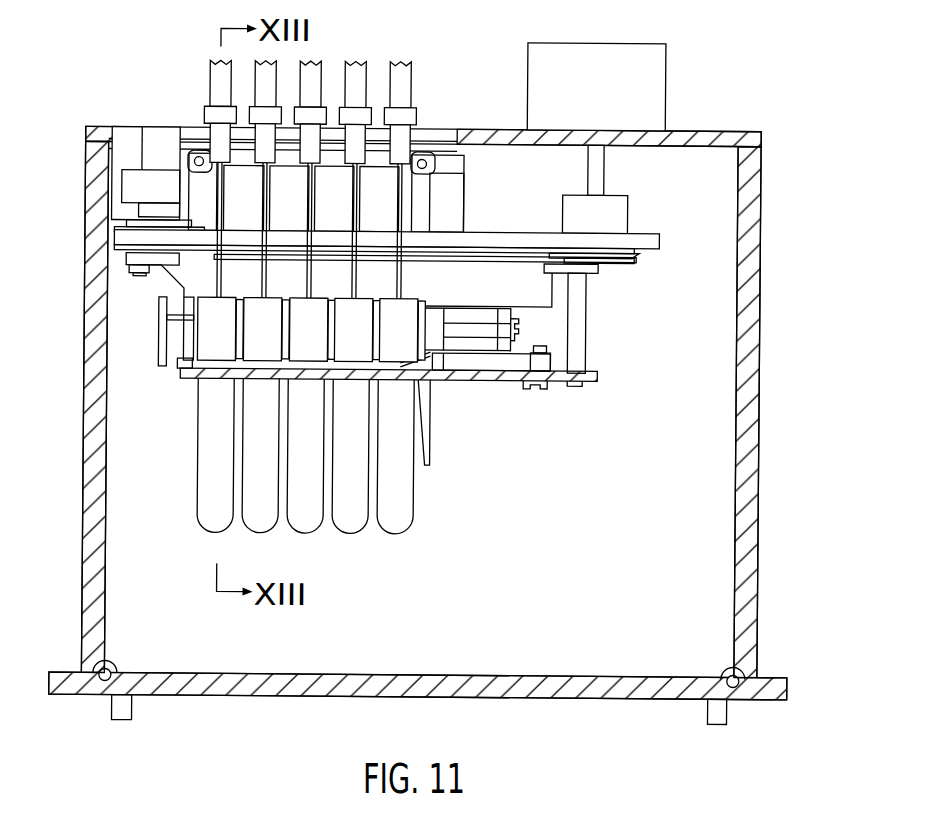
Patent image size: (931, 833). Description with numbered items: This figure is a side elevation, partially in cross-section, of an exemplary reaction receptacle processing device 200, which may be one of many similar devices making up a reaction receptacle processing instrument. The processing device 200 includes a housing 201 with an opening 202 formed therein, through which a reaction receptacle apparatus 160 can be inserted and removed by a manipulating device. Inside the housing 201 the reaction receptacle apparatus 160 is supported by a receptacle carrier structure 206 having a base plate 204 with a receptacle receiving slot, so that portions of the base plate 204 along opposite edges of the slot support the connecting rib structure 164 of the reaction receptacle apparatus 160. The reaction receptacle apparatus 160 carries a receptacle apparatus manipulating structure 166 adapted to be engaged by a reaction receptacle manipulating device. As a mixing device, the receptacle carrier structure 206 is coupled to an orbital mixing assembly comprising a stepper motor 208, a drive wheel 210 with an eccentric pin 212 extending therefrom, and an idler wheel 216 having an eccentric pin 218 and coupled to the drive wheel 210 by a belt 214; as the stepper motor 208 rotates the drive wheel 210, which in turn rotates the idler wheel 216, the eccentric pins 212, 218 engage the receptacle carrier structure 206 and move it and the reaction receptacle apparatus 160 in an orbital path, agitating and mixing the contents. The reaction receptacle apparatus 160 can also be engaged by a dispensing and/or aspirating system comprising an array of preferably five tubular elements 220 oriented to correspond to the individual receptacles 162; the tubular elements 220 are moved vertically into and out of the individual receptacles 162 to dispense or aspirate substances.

The reaction receptacle processing device 200 is at (765, 120).
The housing 201 is at (762, 208).
The opening 202 is at (93, 460).
The base plate 204 is at (468, 378).
The receptacle carrier structure 206 is at (152, 292).
The stepper motor 208 is at (663, 62).
The drive wheel 210 is at (632, 258).
The eccentric pin 212 is at (585, 326).
The belt 214 is at (497, 232).
The idler wheel 216 is at (125, 225).
The eccentric pin 218 is at (137, 278).
The tubular elements 220 is at (400, 196).
The reaction receptacle apparatus 160 is at (205, 498).
The individual receptacles 162 is at (400, 536).
The connecting rib structure 164 is at (342, 366).
The receptacle apparatus manipulating structure 166 is at (146, 346).